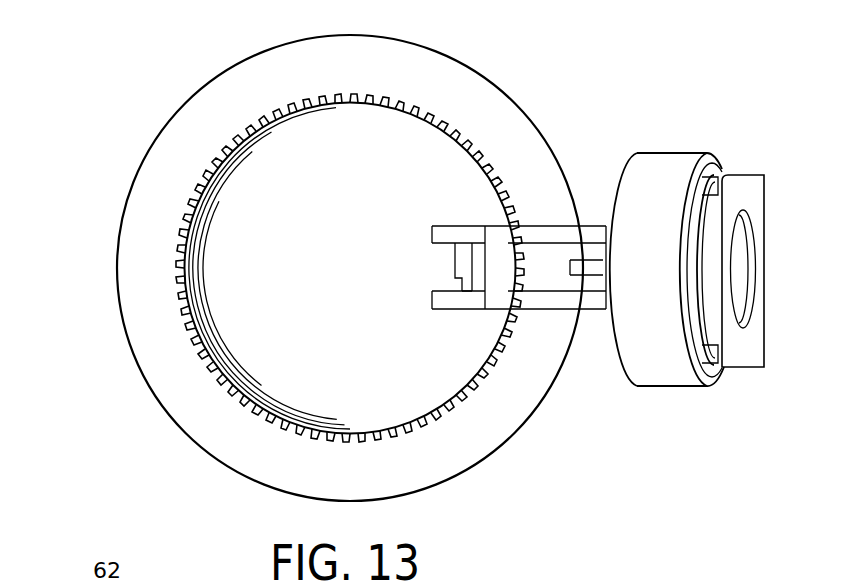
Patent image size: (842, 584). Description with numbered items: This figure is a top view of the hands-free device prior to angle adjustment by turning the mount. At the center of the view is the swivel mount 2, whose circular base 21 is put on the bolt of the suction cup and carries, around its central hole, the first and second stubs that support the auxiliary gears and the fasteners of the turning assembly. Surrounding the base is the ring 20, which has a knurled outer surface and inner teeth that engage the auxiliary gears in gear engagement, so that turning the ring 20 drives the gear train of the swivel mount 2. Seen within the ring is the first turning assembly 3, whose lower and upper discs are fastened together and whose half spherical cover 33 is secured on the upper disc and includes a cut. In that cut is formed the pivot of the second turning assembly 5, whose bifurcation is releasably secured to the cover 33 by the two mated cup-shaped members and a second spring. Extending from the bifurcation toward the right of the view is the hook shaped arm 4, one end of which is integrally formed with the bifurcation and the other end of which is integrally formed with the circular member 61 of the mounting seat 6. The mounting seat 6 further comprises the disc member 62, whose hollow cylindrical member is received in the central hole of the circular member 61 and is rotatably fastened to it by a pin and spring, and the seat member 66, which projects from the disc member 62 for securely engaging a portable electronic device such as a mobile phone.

The swivel mount 2 is at (306, 268).
The circular base 21 is at (150, 358).
The first turning assembly 3 is at (293, 274).
The ring 20 is at (203, 365).
The half spherical cover 33 is at (243, 287).
The hook shaped arm 4 is at (566, 298).
The second turning assembly 5 is at (457, 214).
The mounting seat 6 is at (690, 292).
The circular member 61 is at (673, 370).
The disc member 62 is at (727, 370).
The seat member 66 is at (753, 190).